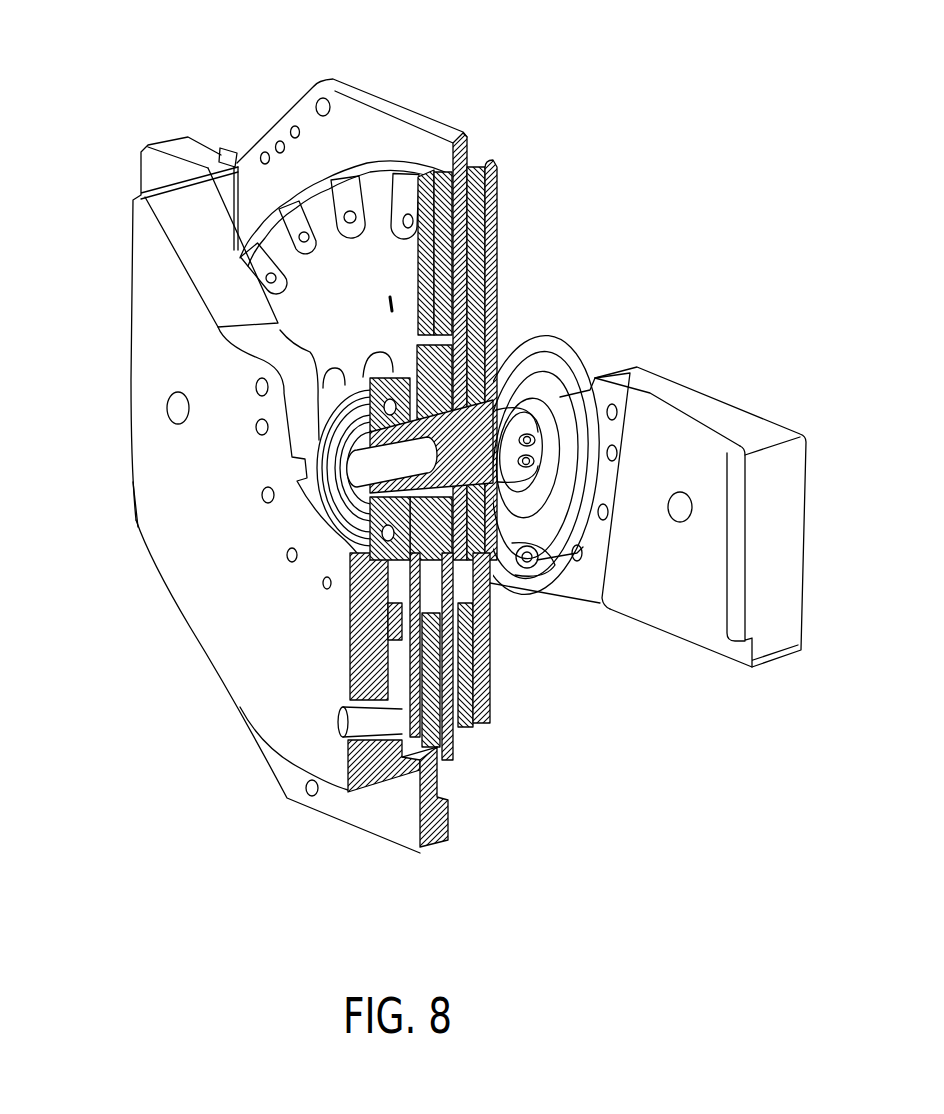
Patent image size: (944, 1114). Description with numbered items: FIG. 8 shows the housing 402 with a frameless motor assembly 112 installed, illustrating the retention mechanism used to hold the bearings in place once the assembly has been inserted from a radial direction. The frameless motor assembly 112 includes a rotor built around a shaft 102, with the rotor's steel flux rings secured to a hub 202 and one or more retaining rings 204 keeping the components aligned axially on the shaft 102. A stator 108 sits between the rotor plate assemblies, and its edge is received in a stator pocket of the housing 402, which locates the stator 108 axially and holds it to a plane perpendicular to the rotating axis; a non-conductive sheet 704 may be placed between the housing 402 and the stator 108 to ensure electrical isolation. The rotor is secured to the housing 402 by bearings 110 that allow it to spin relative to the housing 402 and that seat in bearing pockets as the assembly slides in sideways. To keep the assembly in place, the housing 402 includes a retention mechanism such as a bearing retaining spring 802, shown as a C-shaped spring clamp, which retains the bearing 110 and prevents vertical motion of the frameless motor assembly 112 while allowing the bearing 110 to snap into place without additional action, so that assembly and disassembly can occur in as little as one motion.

The shaft 102 is at (680, 338).
The stator 108 is at (377, 97).
The bearings 110 is at (563, 357).
The frameless motor assembly 112 is at (513, 222).
The hub 202 is at (490, 578).
The retaining rings 204 is at (460, 350).
The housing 402 is at (182, 655).
The non-conductive sheet 704 is at (226, 147).
The bearing retaining spring 802 is at (571, 568).